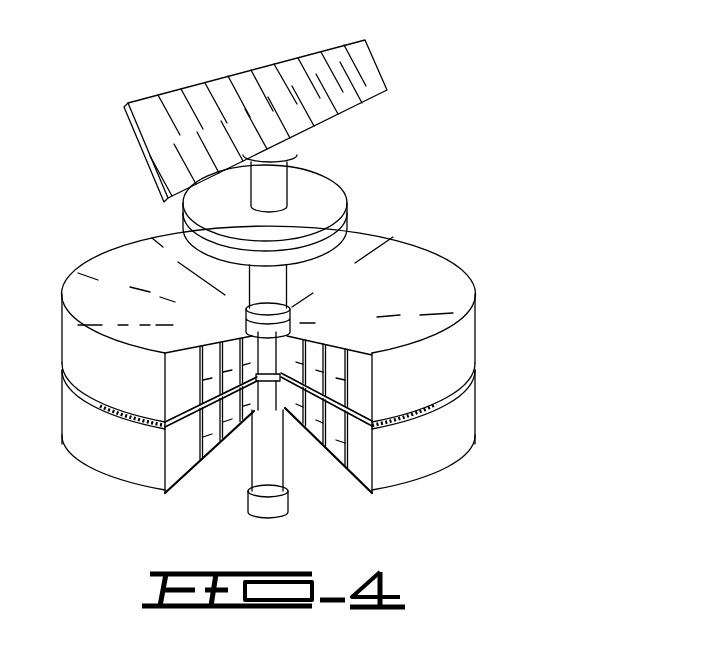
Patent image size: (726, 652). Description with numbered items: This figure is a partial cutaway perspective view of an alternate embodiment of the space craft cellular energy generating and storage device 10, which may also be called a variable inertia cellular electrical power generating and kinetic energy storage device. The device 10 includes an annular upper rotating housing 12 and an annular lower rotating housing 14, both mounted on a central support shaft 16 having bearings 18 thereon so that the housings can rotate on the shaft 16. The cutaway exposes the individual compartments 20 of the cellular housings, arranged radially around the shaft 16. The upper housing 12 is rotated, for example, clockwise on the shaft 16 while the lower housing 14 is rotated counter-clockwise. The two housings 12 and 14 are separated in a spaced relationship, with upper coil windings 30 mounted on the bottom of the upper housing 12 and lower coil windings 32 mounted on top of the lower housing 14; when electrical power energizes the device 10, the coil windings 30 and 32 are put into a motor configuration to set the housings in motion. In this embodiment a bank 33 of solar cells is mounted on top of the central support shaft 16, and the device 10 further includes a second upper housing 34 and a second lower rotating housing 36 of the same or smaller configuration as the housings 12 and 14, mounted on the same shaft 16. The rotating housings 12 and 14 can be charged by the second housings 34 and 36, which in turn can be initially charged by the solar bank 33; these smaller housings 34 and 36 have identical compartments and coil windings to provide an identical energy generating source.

The space craft cellular energy generating and storage device 10 is at (493, 302).
The annular upper rotating housing 12 is at (472, 340).
The annular lower rotating housing 14 is at (405, 479).
The central support shaft 16 is at (276, 190).
The bearings 18 is at (300, 335).
The radial divider walls 20 is at (185, 368).
The upper coil windings 30 is at (124, 419).
The lower coil windings 32 is at (112, 410).
The solar bank 33 is at (318, 58).
The second upper housing 34 is at (343, 195).
The second lower housing 36 is at (345, 227).